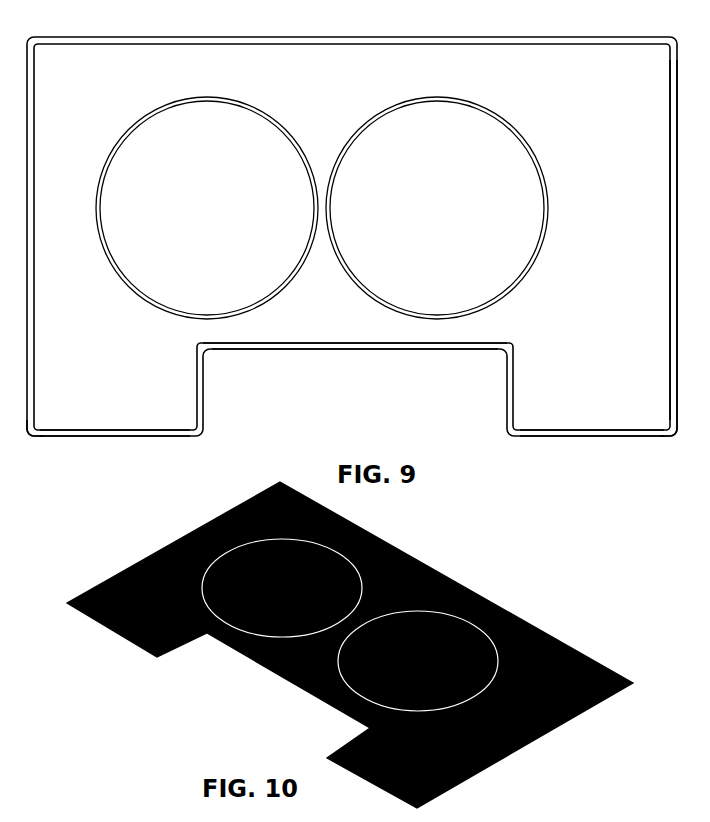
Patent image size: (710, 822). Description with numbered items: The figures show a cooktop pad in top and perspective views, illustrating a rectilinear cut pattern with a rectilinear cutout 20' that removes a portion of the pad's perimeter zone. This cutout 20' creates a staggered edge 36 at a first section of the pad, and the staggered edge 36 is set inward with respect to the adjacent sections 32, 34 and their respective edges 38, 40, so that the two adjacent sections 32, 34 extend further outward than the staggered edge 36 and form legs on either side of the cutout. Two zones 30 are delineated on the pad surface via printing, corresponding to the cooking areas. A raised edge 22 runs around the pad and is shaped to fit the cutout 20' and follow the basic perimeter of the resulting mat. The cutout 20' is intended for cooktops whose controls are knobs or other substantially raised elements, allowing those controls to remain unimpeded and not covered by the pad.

The rectilinear cutout 20' is at (352, 260).
The edge 22 is at (673, 278).
The zones 30 is at (135, 288).
The first adjacent section 32 is at (116, 405).
The second adjacent section 34 is at (622, 415).
The staggered edge 36 is at (296, 348).
The edge of first adjacent section 38 is at (42, 438).
The edge of second adjacent section 40 is at (657, 437).